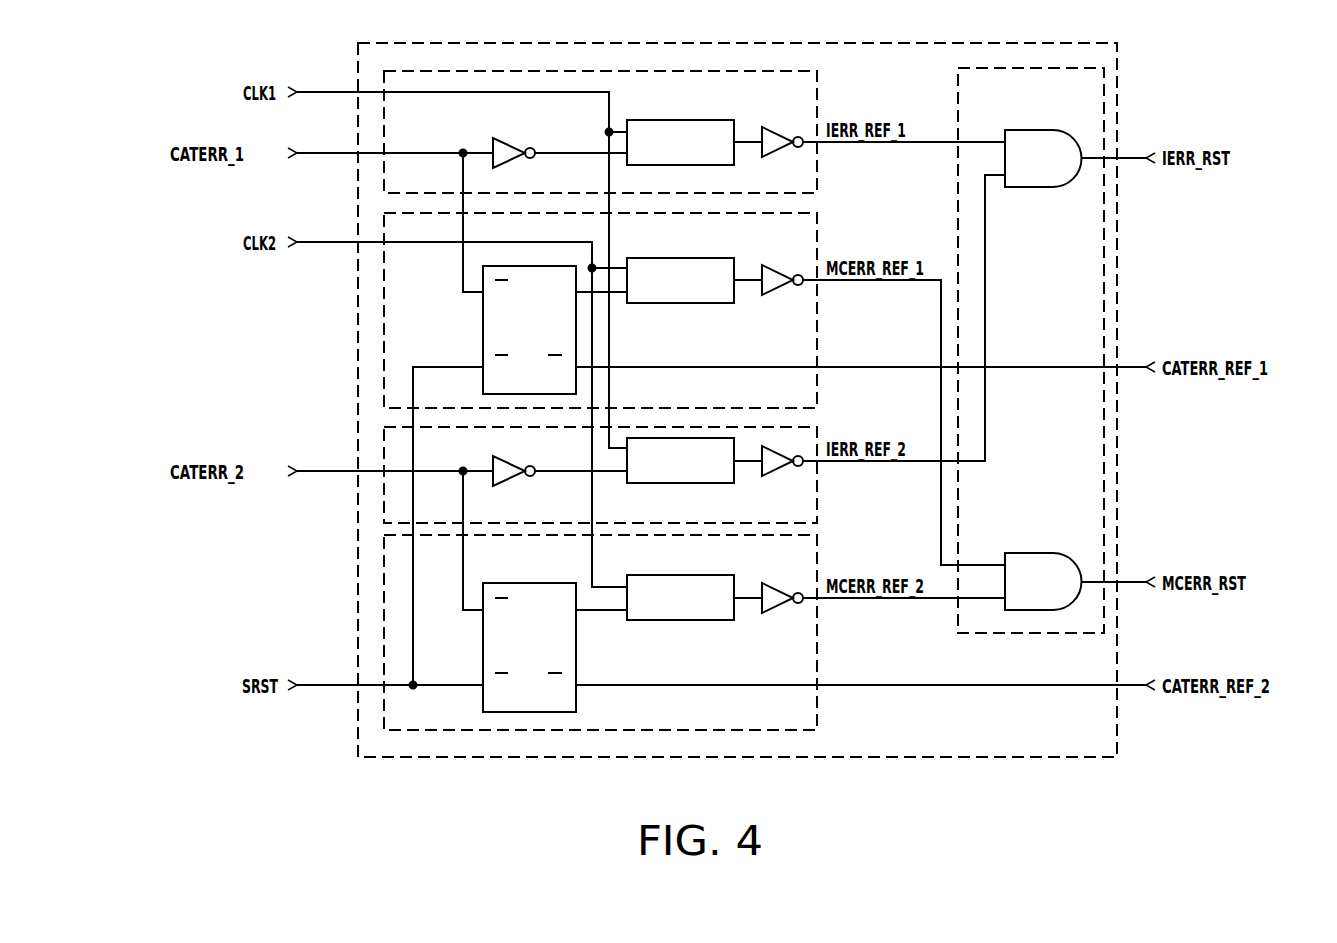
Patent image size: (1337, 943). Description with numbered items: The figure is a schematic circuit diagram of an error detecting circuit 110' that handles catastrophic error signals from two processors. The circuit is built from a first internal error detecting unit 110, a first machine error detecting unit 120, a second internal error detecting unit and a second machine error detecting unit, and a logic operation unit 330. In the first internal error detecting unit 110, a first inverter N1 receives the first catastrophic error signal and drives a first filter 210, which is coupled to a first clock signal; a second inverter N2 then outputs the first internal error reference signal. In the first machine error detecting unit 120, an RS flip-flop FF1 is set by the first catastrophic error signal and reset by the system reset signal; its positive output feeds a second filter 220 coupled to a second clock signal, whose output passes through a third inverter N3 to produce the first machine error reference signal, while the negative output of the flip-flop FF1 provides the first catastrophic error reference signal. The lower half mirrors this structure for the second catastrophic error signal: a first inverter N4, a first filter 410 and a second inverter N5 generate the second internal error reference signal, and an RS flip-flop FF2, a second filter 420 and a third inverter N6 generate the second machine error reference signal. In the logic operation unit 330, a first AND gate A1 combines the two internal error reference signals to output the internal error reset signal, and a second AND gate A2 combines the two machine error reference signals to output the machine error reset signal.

The error handling circuit 110' is at (711, 400).
The first internal error detecting unit 110 is at (647, 132).
The first machine error detecting unit 120 is at (818, 236).
The first filter 210 is at (657, 120).
The second filter 220 is at (657, 258).
The logic operation unit 330 is at (1020, 636).
The first filter 410 is at (657, 483).
The second filter 420 is at (657, 620).
The first inverter N1 is at (511, 138).
The second inverter N2 is at (782, 132).
The third inverter N3 is at (782, 270).
The first inverter N4 is at (512, 486).
The second inverter N5 is at (780, 470).
The third inverter N6 is at (784, 590).
The RS flip-flop FF1 is at (483, 331).
The RS flip-flop FF2 is at (483, 648).
The first AND gate A1 is at (1066, 130).
The second AND gate A2 is at (1066, 553).